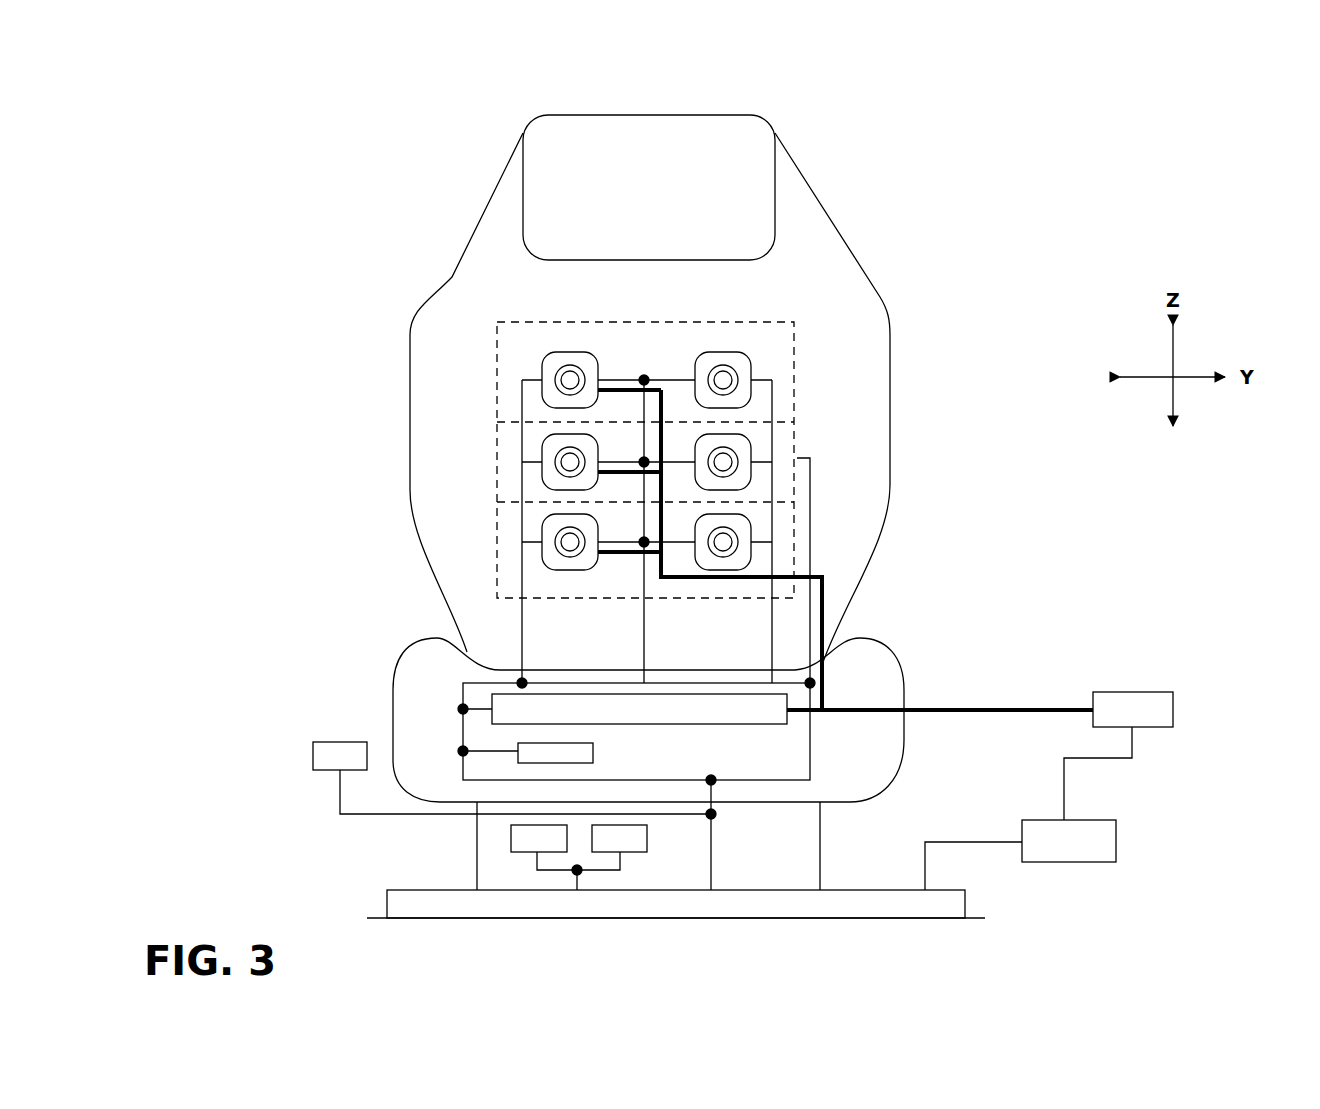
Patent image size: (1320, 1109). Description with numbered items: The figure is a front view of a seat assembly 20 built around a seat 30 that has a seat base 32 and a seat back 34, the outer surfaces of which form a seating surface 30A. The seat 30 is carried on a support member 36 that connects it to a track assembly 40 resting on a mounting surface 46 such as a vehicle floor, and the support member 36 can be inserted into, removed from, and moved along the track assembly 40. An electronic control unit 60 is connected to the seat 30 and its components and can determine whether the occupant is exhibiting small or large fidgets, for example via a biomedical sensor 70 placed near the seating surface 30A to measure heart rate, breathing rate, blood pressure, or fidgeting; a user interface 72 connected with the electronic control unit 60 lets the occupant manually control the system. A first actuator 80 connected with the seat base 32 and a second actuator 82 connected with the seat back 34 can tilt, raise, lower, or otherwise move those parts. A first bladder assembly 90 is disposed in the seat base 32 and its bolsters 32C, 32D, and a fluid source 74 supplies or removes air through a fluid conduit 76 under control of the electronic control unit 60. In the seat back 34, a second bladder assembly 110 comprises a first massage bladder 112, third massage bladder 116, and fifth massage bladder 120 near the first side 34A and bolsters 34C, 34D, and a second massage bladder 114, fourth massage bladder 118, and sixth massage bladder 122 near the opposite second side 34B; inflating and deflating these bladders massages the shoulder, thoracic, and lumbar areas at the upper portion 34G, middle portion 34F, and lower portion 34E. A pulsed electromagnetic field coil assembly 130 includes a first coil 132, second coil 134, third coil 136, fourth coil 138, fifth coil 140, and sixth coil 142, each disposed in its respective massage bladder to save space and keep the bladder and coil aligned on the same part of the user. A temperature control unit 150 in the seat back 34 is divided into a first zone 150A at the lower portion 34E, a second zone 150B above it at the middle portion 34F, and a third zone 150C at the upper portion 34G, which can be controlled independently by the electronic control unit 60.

The seat assembly 20 is at (1045, 212).
The seat 30 is at (973, 652).
The seating surface 30A is at (813, 302).
The seat base 32 is at (887, 778).
The bolster 32C is at (437, 638).
The bolster 32D is at (905, 660).
The seat back 34 is at (868, 567).
The first side 34A is at (368, 557).
The second side 34B is at (945, 518).
The bolster 34C is at (452, 277).
The bolster 34D is at (847, 312).
The lower portion 34E is at (857, 595).
The middle portion 34F is at (897, 452).
The upper portion 34G is at (803, 388).
The support member 36 is at (822, 856).
The track assembly 40 is at (415, 890).
The mounting surface 46 is at (377, 921).
The electronic control unit 60 is at (1093, 820).
The sensor 70 is at (530, 743).
The user interface 72 is at (335, 742).
The fluid source 74 is at (1150, 692).
The fluid conduit 76 is at (1082, 688).
The first actuator 80 is at (520, 852).
The second actuator 82 is at (642, 852).
The first bladder assembly 90 is at (785, 727).
The second bladder assembly 110 is at (648, 318).
The first massage bladder 112 is at (548, 358).
The second massage bladder 114 is at (745, 358).
The third massage bladder 116 is at (548, 440).
The fourth massage bladder 118 is at (745, 440).
The fifth massage bladder 120 is at (548, 520).
The sixth massage bladder 122 is at (745, 520).
The pulsed electromagnetic field coil assembly 130 is at (807, 542).
The first coil 132 is at (556, 372).
The second coil 134 is at (740, 377).
The third coil 136 is at (558, 455).
The fourth coil 138 is at (740, 460).
The fifth coil 140 is at (558, 537).
The sixth coil 142 is at (740, 535).
The temperature control unit 150 is at (755, 320).
The first zone 150A is at (497, 565).
The second zone 150B is at (497, 460).
The third zone 150C is at (497, 328).